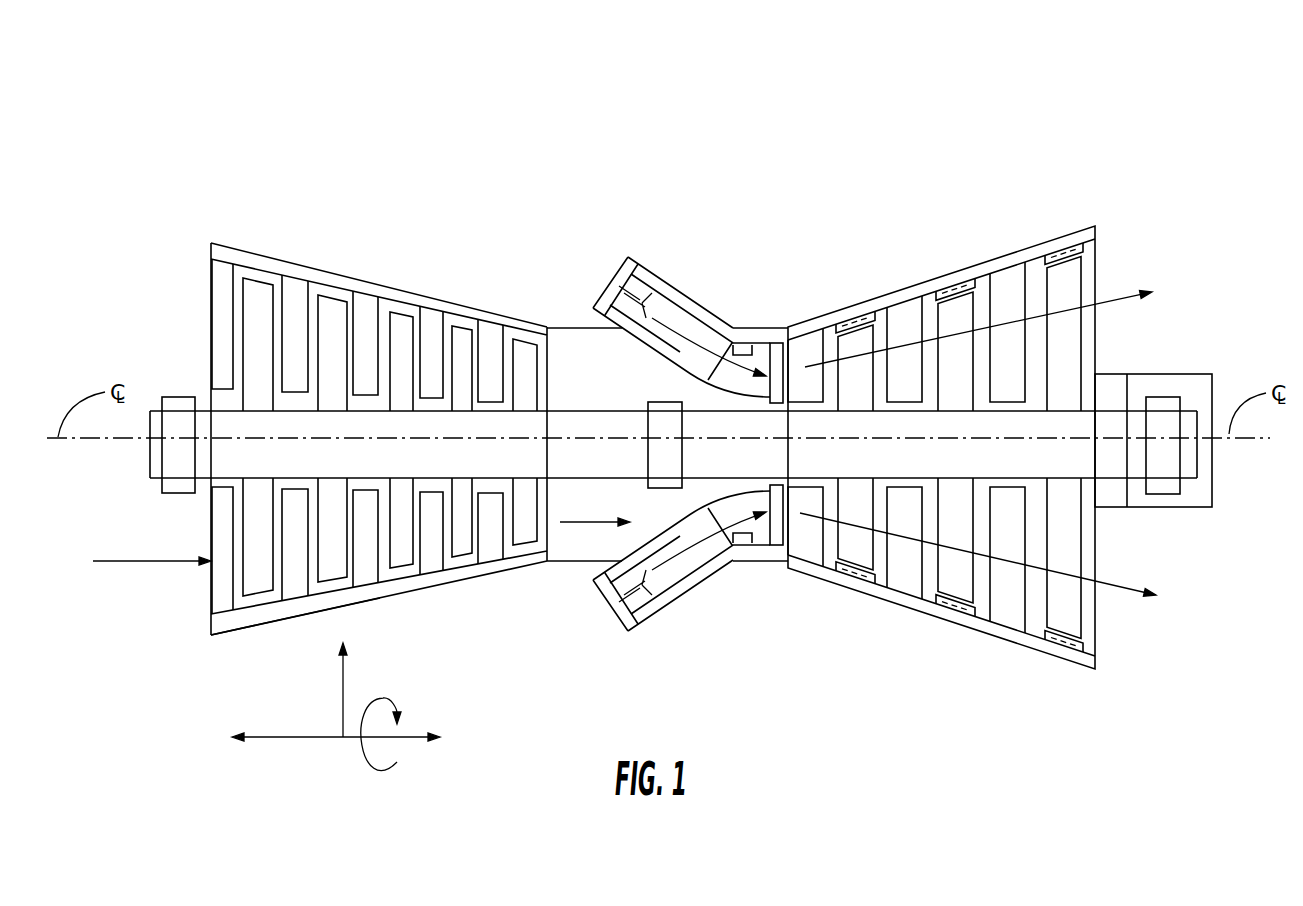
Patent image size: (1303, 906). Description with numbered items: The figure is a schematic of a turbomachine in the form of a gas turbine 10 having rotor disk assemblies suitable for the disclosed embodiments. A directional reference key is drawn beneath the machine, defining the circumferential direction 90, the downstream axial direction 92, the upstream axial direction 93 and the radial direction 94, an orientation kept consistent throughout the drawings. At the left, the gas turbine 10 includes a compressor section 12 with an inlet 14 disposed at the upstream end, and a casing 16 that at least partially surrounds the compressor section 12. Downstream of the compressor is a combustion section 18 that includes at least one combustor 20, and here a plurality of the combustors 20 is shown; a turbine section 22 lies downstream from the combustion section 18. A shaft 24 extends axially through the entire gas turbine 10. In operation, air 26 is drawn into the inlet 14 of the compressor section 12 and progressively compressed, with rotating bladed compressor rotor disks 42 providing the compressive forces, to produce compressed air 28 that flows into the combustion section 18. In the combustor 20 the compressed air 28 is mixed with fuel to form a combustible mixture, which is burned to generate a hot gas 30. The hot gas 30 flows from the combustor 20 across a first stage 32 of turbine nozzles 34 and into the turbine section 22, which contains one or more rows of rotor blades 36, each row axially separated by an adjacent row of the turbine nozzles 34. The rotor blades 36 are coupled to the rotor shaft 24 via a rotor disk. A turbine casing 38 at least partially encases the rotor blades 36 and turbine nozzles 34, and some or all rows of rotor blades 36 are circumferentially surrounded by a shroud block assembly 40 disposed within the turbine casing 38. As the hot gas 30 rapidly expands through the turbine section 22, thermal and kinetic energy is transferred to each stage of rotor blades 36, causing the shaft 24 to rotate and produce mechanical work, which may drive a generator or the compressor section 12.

The gas turbine 10 is at (605, 72).
The compressor section 12 is at (548, 320).
The inlet 14 is at (211, 317).
The casing 16 is at (228, 637).
The combustion section 18 is at (790, 318).
The combustor 20 is at (650, 265).
The turbine section 22 is at (1093, 218).
The shaft 24 is at (1133, 408).
The air 26 is at (151, 561).
The compressed air 28 is at (570, 522).
The hot gas 30 is at (682, 332).
The first stage 32 is at (805, 583).
The turbine nozzles 34 is at (908, 307).
The rotor blades 36 is at (852, 545).
The turbine casing 38 is at (1022, 647).
The shroud block assembly 40 is at (957, 288).
The bladed compressor rotor disks 42 is at (458, 356).
The circumferential direction 90 is at (362, 757).
The downstream axial direction 92 is at (407, 735).
The upstream axial direction 93 is at (287, 737).
The radial direction 94 is at (343, 690).